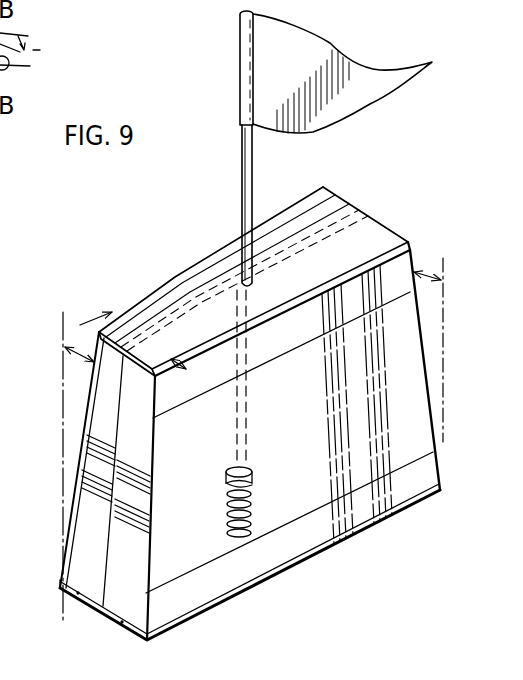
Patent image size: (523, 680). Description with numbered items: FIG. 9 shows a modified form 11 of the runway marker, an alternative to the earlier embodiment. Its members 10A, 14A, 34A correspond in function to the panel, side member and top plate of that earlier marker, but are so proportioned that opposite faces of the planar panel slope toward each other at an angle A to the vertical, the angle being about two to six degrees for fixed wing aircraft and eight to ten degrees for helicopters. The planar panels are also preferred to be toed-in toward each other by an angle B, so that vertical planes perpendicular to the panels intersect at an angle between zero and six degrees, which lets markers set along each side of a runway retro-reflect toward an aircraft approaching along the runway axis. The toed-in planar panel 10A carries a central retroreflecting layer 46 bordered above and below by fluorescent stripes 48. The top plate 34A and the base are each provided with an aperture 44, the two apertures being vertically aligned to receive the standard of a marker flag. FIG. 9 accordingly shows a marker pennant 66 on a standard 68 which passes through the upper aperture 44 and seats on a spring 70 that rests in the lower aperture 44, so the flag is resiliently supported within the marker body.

The form of the marker 11 is at (57, 431).
The planar panel 10A is at (147, 585).
The member 14A is at (120, 585).
The top plate 34A is at (384, 239).
The aperture 44 is at (235, 537).
The central retroreflecting layer 46 is at (294, 422).
The fluorescent stripe 48 is at (290, 351).
The marker pennant 66 is at (277, 48).
The standard 68 is at (240, 146).
The spring 70 is at (254, 496).